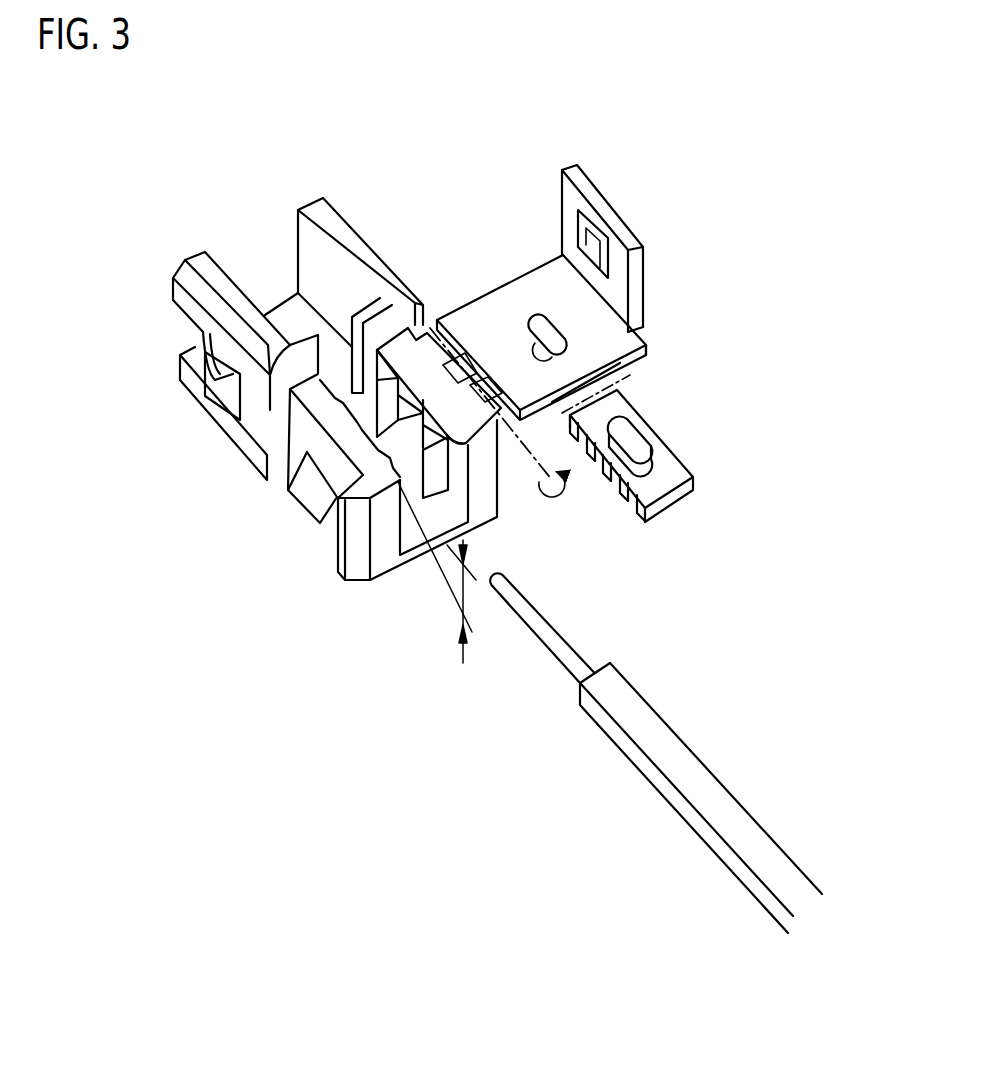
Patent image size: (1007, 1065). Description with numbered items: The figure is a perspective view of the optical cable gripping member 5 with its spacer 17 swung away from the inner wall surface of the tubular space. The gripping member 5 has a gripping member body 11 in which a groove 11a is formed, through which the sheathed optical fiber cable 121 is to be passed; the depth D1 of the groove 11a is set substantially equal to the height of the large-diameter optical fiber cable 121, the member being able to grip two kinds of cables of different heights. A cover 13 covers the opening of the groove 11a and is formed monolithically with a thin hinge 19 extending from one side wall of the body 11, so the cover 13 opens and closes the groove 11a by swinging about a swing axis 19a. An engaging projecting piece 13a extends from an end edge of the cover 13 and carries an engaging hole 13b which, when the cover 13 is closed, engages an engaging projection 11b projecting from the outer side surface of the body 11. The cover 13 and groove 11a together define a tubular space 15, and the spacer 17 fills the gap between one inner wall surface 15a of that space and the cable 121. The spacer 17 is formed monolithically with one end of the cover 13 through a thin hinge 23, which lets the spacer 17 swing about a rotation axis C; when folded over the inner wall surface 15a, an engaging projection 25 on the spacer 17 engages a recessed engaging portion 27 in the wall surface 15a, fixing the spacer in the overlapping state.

The optical cable gripping member 5 is at (203, 424).
The gripping member body 11 is at (370, 226).
The groove 11a is at (438, 515).
The engaging projection 11b is at (305, 495).
The cover 13 is at (505, 290).
The engaging projecting piece 13a is at (650, 275).
The engaging hole 13b is at (594, 240).
The tubular space 15 is at (413, 473).
The one inner wall surface 15a is at (597, 333).
The spacer 17 is at (693, 480).
The thin hinge 19 is at (452, 340).
The swing axis 19a is at (523, 455).
The thin hinge 23 is at (600, 392).
The engaging projection 25 is at (640, 438).
The recessed engaging portion 27 is at (548, 338).
The optical fiber cable 121 is at (655, 795).
The rotation axis C is at (562, 408).
The depth of the groove D1 is at (446, 572).